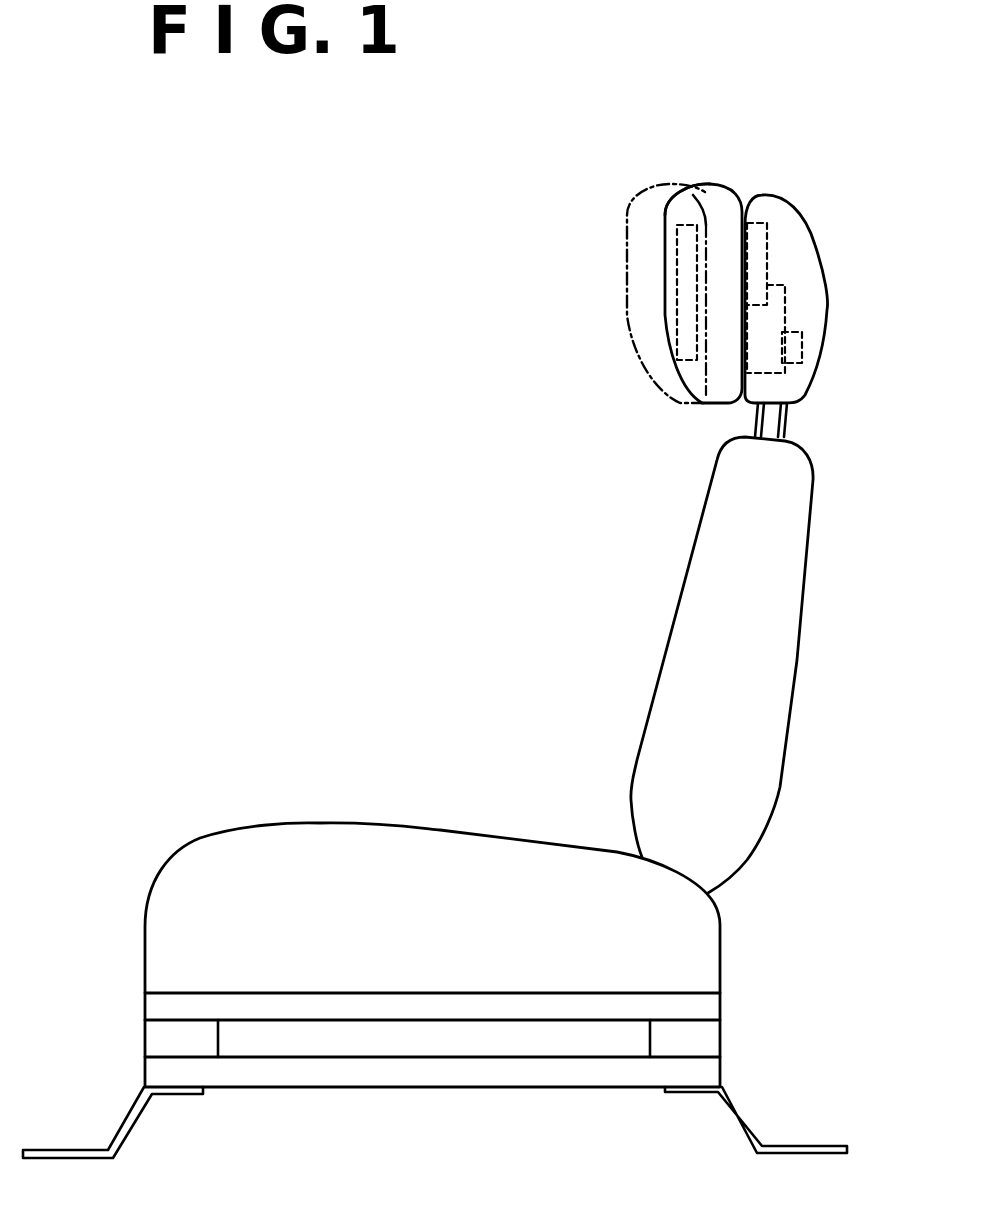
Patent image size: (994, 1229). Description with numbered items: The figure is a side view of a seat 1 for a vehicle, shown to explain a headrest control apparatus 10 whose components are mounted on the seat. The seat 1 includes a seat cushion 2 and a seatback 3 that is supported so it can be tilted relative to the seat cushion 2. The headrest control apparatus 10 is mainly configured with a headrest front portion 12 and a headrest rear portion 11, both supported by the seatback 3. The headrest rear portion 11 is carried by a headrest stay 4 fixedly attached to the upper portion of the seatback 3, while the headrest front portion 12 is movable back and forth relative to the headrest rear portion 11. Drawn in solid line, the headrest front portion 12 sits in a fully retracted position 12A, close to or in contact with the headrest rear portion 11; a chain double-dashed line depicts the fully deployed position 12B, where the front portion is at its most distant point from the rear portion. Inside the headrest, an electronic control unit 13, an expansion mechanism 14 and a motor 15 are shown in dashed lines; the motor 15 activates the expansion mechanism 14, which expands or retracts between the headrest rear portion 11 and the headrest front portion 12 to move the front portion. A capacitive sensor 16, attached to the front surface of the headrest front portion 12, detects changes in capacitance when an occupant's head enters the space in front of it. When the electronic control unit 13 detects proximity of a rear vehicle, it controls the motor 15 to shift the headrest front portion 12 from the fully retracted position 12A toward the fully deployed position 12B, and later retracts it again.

The seat 1 is at (447, 515).
The seat cushion 2 is at (437, 833).
The seatback 3 is at (668, 638).
The headrest stay 4 is at (787, 418).
The headrest control apparatus 10 is at (612, 330).
The headrest rear portion 11 is at (818, 278).
The headrest front portion 12 is at (727, 183).
The fully retracted position 12A is at (700, 183).
The fully deployed position 12B is at (630, 207).
The electronic control unit 13 is at (767, 247).
The expansion mechanism 14 is at (785, 308).
The motor 15 is at (802, 352).
The capacitive sensor 16 is at (677, 340).